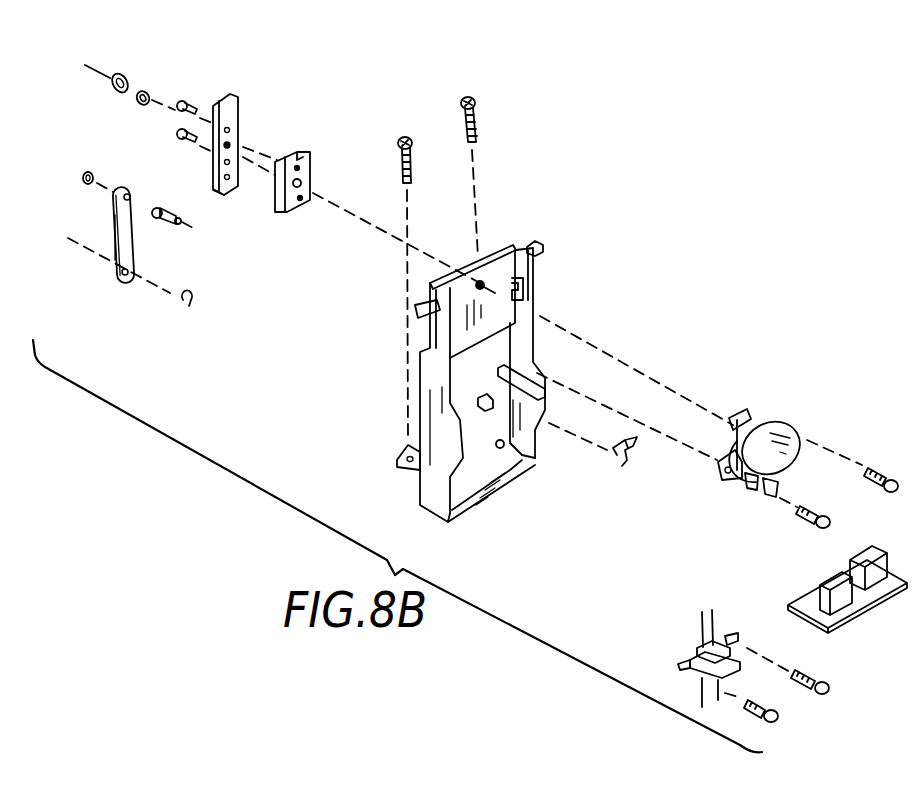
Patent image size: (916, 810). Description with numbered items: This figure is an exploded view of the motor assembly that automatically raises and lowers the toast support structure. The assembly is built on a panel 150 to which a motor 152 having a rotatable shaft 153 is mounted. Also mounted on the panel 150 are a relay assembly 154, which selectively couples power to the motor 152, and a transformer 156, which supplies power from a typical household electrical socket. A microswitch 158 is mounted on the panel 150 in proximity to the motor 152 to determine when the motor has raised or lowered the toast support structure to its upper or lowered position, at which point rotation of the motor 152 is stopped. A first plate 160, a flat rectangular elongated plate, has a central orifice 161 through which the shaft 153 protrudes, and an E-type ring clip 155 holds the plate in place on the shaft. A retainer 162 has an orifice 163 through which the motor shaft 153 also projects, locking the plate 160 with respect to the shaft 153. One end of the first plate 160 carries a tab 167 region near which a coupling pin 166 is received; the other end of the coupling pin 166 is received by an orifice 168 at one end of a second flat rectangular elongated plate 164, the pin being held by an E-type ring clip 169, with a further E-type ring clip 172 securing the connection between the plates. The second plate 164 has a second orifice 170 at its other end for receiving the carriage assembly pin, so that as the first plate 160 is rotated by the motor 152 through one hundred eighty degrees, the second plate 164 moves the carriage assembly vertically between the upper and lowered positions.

The panel 150 is at (537, 280).
The motor 152 is at (790, 437).
The rotatable shaft 153 is at (747, 413).
The relay assembly 154 is at (850, 606).
The E-type ring clip 155 is at (123, 75).
The transformer 156 is at (737, 663).
The microswitch 158 is at (617, 460).
The first plate 160 is at (243, 117).
The central orifice 161 is at (232, 146).
The retainer 162 is at (315, 160).
The orifice 163 is at (303, 183).
The second plate 164 is at (118, 238).
The coupling pin 166 is at (168, 208).
The tab 167 is at (218, 196).
The orifice 168 is at (130, 194).
The E-type ring clip 169 is at (84, 172).
The second orifice 170 is at (128, 284).
The E-type ring clip 172 is at (185, 310).